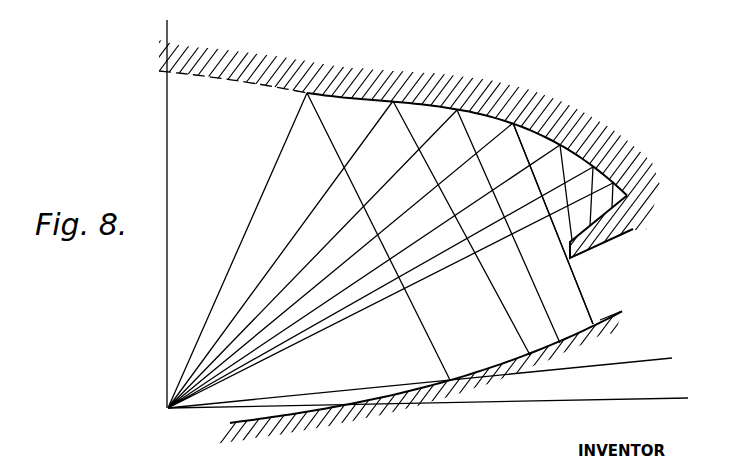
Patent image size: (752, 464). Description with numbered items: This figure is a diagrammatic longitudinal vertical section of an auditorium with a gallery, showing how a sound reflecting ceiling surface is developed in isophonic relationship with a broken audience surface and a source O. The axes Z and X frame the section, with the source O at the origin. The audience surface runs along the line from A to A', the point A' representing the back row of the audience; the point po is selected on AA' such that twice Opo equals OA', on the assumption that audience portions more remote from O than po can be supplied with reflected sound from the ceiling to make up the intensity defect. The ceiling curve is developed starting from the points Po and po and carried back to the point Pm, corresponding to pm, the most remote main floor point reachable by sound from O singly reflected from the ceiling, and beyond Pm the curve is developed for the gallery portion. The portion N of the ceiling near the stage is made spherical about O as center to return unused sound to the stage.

The Z axis Z is at (157, 207).
The X axis X is at (435, 398).
The source O is at (410, 260).
The portion of the ceiling in the neighborhood of the stage N is at (240, 83).
The starting point of the ceiling curve Po is at (306, 94).
The most remote reflection point Pm is at (512, 123).
The audience surface A is at (418, 373).
The back row of the audience A' is at (621, 318).